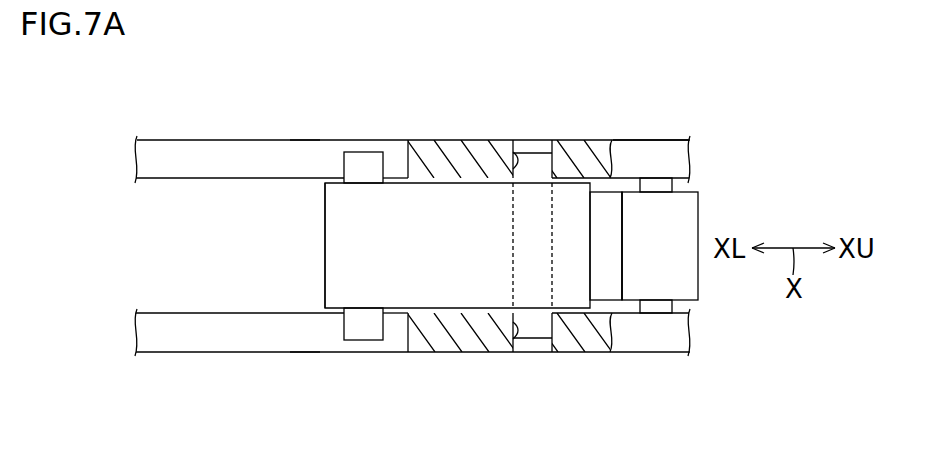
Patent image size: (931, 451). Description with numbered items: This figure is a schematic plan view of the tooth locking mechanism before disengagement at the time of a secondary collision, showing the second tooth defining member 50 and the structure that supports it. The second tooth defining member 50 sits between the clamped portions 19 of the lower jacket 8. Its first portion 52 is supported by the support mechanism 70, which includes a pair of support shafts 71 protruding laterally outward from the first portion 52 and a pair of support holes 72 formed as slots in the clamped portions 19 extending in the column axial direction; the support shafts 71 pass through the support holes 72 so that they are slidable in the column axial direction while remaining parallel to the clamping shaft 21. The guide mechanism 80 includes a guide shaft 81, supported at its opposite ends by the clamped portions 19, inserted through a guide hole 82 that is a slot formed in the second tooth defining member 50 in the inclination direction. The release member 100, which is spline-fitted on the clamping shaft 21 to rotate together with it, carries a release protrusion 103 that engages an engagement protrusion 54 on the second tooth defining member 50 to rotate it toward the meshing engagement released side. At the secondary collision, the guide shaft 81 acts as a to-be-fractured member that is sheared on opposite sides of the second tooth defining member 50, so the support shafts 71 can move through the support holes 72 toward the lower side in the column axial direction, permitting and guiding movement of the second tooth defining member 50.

The lower jacket 8 is at (620, 108).
The clamped portions 19 is at (644, 139).
The clamping shaft 21 is at (663, 180).
The second tooth defining member 50 is at (323, 248).
The first portion 52 is at (338, 275).
The engagement protrusion 54 is at (573, 297).
The support mechanism 70 is at (332, 245).
The support shafts 71 is at (366, 160).
The support holes 72 is at (300, 150).
The guide mechanism 80 is at (513, 227).
The guide shaft 81 is at (538, 152).
The guide hole 82 is at (517, 160).
The release member 100 is at (700, 215).
The release protrusion 103 is at (613, 293).